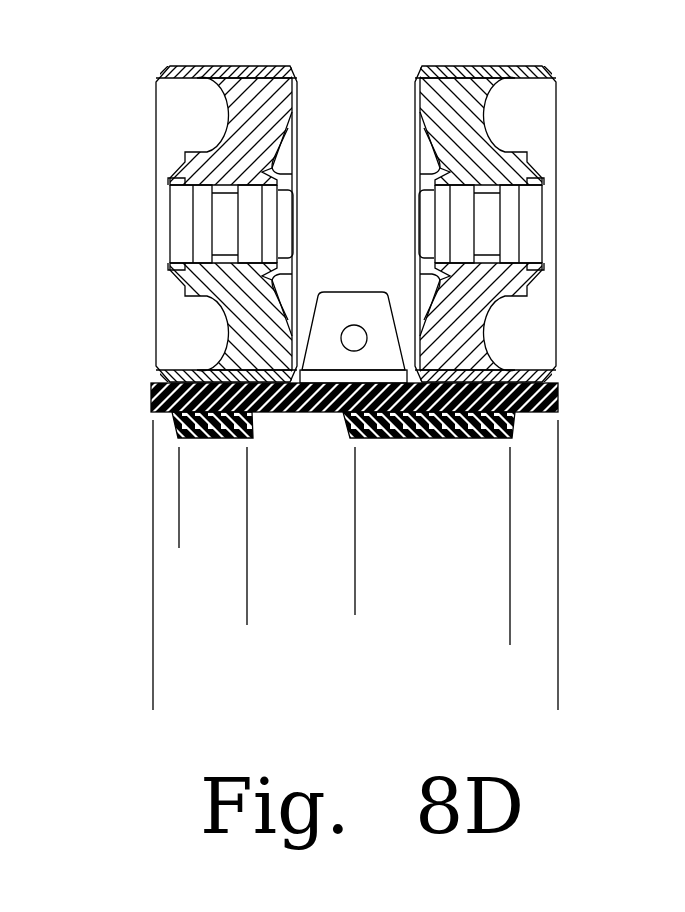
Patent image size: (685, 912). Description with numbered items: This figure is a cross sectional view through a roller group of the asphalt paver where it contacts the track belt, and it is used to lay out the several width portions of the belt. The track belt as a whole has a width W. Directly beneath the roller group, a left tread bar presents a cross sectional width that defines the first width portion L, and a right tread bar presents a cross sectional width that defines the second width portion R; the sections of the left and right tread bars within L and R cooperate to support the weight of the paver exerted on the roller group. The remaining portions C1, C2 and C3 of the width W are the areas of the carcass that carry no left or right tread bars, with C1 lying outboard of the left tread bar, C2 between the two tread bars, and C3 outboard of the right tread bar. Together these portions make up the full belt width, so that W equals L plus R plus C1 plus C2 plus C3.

The remaining portion C1 is at (247, 470).
The first width portion L is at (315, 528).
The remaining portion C2 is at (413, 595).
The second width portion R is at (510, 595).
The remaining portion C3 is at (630, 595).
The width W is at (558, 682).